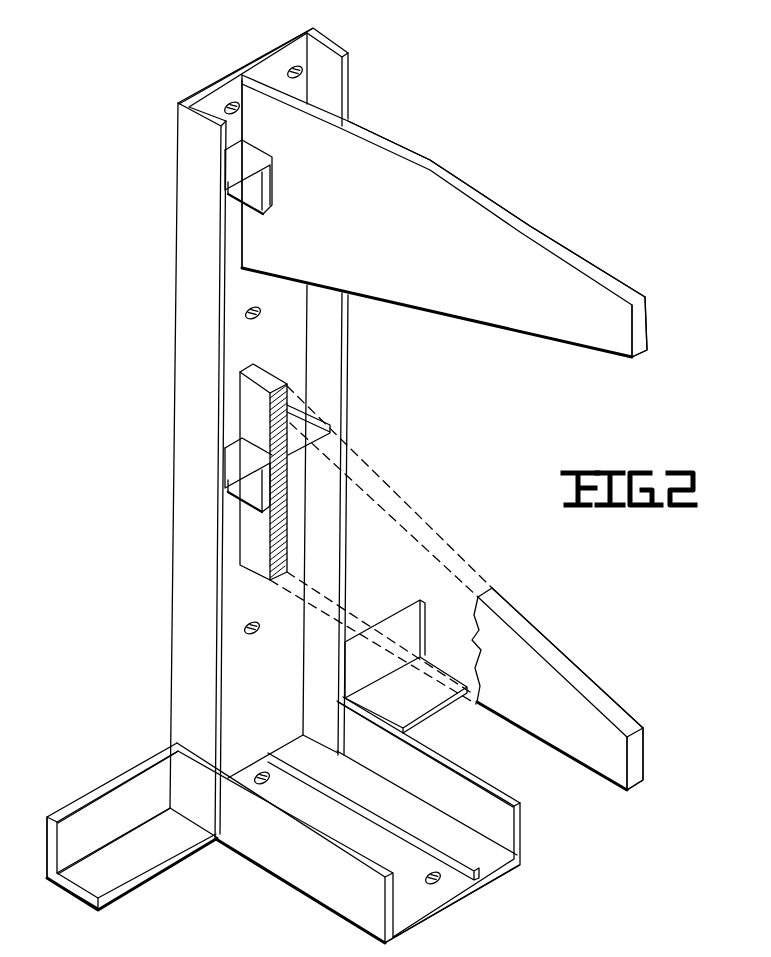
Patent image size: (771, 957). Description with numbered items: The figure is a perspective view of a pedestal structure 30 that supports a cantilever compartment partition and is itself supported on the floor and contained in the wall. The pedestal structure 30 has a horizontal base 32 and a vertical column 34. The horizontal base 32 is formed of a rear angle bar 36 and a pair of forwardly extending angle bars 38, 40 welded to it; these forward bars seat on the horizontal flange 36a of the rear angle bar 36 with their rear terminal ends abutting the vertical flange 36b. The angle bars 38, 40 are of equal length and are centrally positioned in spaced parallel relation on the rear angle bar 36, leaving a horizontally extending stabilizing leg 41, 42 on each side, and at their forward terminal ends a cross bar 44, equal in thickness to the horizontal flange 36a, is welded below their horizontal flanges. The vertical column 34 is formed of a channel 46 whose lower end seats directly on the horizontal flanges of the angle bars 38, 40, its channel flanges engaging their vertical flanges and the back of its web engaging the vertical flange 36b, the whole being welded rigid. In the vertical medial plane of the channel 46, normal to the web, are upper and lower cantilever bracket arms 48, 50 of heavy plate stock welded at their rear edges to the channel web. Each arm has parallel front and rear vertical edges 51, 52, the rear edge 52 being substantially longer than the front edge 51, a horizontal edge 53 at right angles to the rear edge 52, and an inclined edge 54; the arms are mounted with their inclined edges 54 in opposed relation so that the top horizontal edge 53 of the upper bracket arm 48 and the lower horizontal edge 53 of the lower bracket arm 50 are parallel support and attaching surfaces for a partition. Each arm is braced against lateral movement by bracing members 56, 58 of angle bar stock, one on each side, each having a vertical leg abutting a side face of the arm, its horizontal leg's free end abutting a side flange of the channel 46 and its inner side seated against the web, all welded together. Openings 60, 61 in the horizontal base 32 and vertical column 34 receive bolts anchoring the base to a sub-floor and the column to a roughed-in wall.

The pedestal structure 30 is at (158, 373).
The horizontal base 32 is at (272, 874).
The vertical column 34 is at (174, 268).
The rear angle bar 36 is at (107, 781).
The horizontal flange 36a is at (140, 858).
The vertical flange 36b is at (143, 772).
The forwardly extending angle bar 38 is at (328, 890).
The forwardly extending angle bar 40 is at (487, 800).
The stabilizing leg 41 is at (67, 893).
The stabilizing leg 42 is at (392, 620).
The cross bar 44 is at (452, 887).
The channel 46 is at (193, 93).
The upper cantilever bracket arm 48 is at (546, 272).
The lower cantilever bracket arm 50 is at (558, 700).
The front vertical edge 51 is at (638, 332).
The rear vertical edge 52 is at (243, 248).
The horizontal edge 53 is at (487, 180).
The inclined edge 54 is at (505, 332).
The bracing member 56 is at (250, 165).
The bracing member 58 is at (322, 418).
The openings 60 is at (268, 780).
The openings 61 is at (294, 66).